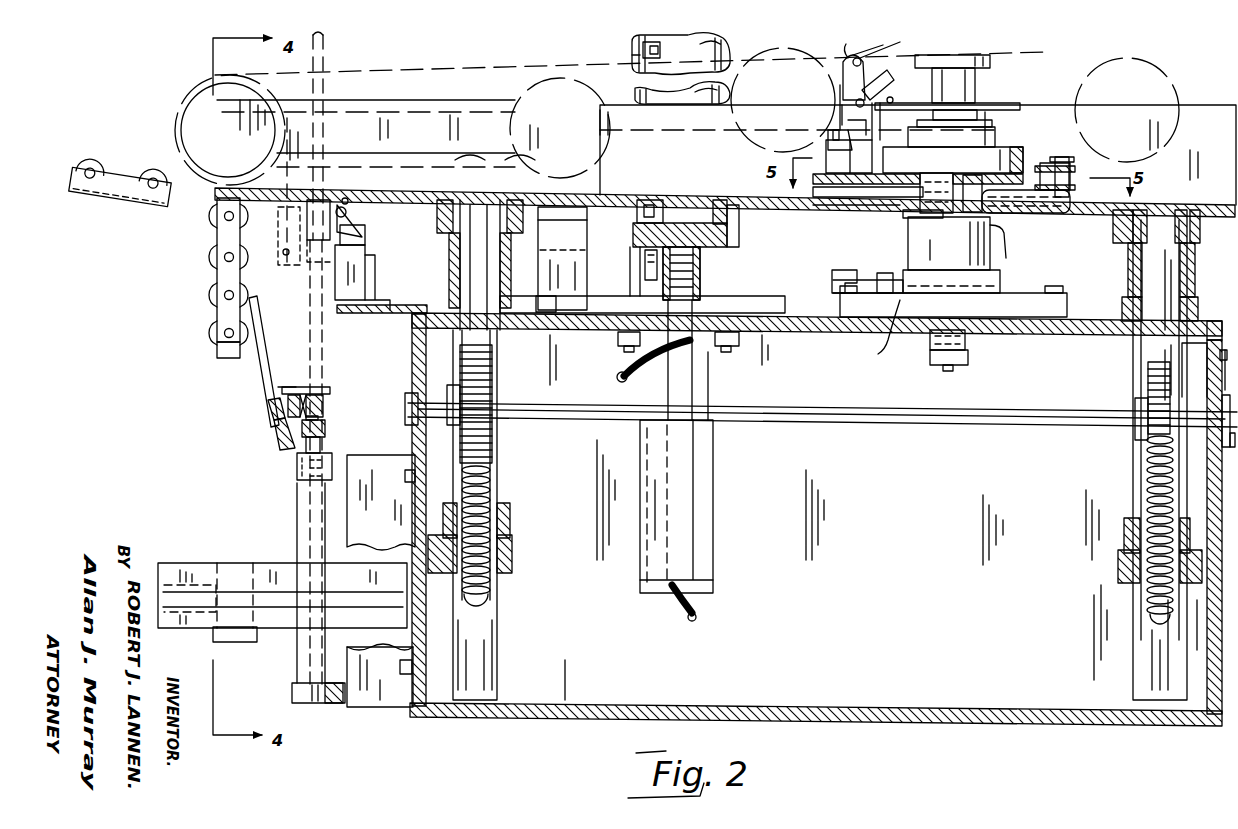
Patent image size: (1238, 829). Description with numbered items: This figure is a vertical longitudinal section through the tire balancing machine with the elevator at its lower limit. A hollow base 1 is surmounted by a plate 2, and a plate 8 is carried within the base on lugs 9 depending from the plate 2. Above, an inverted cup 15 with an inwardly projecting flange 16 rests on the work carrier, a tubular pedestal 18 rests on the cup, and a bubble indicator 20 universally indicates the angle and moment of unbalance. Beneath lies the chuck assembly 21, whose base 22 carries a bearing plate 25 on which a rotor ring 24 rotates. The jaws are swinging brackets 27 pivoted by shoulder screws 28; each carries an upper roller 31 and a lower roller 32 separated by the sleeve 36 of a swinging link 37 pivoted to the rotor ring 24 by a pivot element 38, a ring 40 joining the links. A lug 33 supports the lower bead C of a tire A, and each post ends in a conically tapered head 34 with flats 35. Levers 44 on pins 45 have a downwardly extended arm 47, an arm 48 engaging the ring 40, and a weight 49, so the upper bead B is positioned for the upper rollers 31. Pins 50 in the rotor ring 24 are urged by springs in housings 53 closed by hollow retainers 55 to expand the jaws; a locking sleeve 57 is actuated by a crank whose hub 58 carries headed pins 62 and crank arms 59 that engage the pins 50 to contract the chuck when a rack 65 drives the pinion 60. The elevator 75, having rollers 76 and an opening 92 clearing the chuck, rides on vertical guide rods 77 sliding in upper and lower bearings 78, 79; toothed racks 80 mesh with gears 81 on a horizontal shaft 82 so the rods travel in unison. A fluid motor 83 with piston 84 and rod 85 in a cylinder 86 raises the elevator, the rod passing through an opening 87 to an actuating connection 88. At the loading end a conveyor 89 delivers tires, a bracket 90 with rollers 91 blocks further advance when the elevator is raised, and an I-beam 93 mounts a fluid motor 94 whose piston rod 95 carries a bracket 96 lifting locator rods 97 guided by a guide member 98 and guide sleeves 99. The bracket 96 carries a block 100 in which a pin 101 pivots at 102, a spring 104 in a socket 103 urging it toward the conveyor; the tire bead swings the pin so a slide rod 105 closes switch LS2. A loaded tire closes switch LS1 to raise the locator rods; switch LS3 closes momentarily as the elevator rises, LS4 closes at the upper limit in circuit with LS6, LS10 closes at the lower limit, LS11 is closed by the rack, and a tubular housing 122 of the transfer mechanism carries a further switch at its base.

The base 1 is at (575, 720).
The plate 2 is at (1030, 290).
The plate 8 is at (968, 358).
The lugs 9 is at (930, 345).
The inverted cup 15 is at (951, 128).
The inwardly projecting flange 16 is at (838, 90).
The tubular pedestal 18 is at (975, 92).
The bubble indicator 20 is at (990, 62).
The chuck assembly 21 is at (812, 200).
The chuck base 22 is at (840, 198).
The rotor ring 24 is at (970, 170).
The bearing plate 25 is at (991, 161).
The swinging brackets 27 is at (828, 135).
The shoulder screws 28 is at (1065, 160).
The upper roller 31 is at (840, 80).
The lower roller 32 is at (838, 120).
The lug 33 is at (824, 152).
The conically tapered head 34 is at (874, 42).
The flats 35 is at (834, 45).
The sleeve 36 is at (852, 100).
The swinging link 37 is at (892, 92).
The pivot element 38 is at (904, 110).
The ring 40 is at (1020, 106).
The levers 44 is at (897, 44).
The pins 45 is at (862, 138).
The downwardly extended arm 47 is at (840, 108).
The arm 48 is at (894, 72).
The weight 49 is at (865, 56).
The pins 50 is at (940, 170).
The spring housings 53 is at (1030, 213).
The hollow retainer 55 is at (1100, 205).
The locking sleeve 57 is at (900, 213).
The crank hub 58 is at (995, 262).
The crank arms 59 is at (1000, 238).
The pinion 60 is at (1000, 278).
The headed pins 62 is at (905, 235).
The rack 65 is at (895, 270).
The elevator 75 is at (375, 95).
The rollers 76 is at (476, 188).
The vertical guide rods 77 is at (498, 622).
The upper bearing 78 is at (438, 278).
The lower bearing 79 is at (512, 525).
The toothed racks 80 is at (492, 592).
The gears 81 is at (495, 462).
The horizontal shaft 82 is at (570, 420).
The fluid motor 83 is at (690, 499).
The piston 84 is at (715, 552).
The piston rod 85 is at (713, 376).
The cylinder 86 is at (720, 483).
The opening 87 is at (636, 355).
The actuating connection 88 is at (702, 290).
The conveyor 89 is at (117, 172).
The bracket 90 is at (211, 352).
The rollers 91 is at (212, 328).
The opening 92 is at (782, 215).
The I-beam 93 is at (385, 674).
The fluid motor 94 is at (294, 682).
The piston rod 95 is at (300, 450).
The bracket 96 is at (328, 428).
The work piece locator rods 97 is at (322, 358).
The guide member 98 is at (330, 450).
The guide sleeves 99 is at (375, 213).
The block 100 is at (325, 402).
The pin 101 is at (268, 370).
The pivot 102 is at (278, 440).
The socket 103 is at (287, 387).
The spring 104 is at (268, 406).
The slide rod 105 is at (330, 385).
The tubular housing 122 is at (622, 46).
The switch LS1 is at (561, 259).
The switch LS2 is at (372, 234).
The switch LS3 is at (667, 200).
The switch LS4 is at (632, 64).
The switch LS6 is at (870, 333).
The switch LS10 is at (642, 258).
The switch LS11 is at (858, 262).
The tire A is at (1178, 60).
The upper bead B is at (1060, 58).
The lower bead C is at (1070, 130).